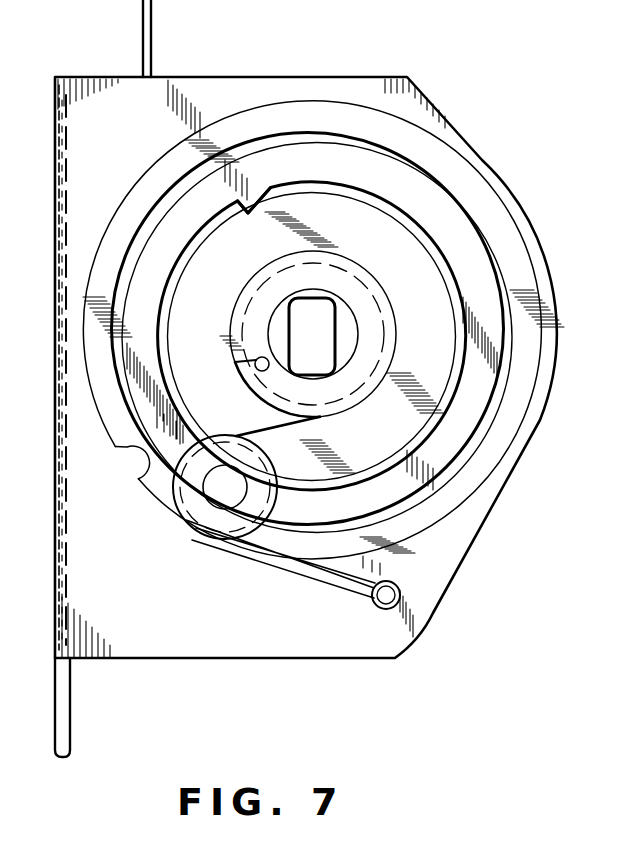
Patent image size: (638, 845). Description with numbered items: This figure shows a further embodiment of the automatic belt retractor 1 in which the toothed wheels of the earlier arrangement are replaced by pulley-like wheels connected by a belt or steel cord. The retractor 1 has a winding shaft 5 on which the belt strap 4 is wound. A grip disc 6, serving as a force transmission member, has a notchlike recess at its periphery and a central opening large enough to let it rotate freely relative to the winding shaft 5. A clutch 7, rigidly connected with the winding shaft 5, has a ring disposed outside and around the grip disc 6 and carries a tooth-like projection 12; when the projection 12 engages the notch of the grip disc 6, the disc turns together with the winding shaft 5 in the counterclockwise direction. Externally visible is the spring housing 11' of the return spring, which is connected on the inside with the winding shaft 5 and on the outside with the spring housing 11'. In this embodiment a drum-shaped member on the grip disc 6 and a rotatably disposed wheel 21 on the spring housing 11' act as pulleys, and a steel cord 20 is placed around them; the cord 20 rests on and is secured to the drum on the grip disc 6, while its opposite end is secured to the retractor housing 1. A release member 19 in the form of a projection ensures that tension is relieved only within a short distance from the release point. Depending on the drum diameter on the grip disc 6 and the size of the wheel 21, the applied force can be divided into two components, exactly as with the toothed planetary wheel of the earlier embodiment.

The automatic belt retractor 1 is at (423, 92).
The belt strap 4 is at (147, 33).
The winding shaft 5 is at (323, 336).
The grip disc 6 is at (354, 235).
The clutch 7 is at (455, 432).
The spring housing 11' is at (349, 362).
The tooth-like projection 12 is at (262, 205).
The release member 19 is at (135, 465).
The steel cord 20 is at (330, 582).
The rotatably disposed wheel 21 is at (216, 518).